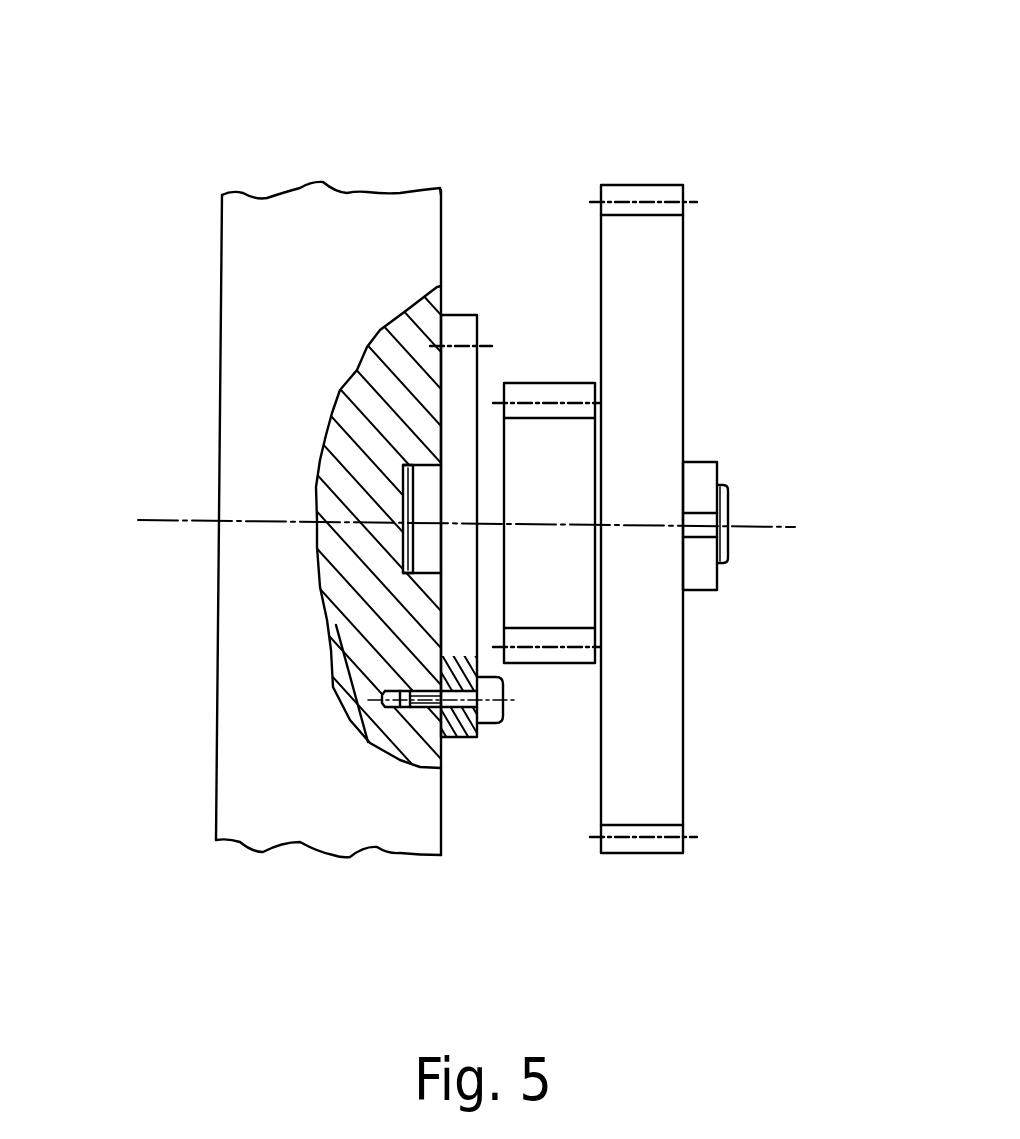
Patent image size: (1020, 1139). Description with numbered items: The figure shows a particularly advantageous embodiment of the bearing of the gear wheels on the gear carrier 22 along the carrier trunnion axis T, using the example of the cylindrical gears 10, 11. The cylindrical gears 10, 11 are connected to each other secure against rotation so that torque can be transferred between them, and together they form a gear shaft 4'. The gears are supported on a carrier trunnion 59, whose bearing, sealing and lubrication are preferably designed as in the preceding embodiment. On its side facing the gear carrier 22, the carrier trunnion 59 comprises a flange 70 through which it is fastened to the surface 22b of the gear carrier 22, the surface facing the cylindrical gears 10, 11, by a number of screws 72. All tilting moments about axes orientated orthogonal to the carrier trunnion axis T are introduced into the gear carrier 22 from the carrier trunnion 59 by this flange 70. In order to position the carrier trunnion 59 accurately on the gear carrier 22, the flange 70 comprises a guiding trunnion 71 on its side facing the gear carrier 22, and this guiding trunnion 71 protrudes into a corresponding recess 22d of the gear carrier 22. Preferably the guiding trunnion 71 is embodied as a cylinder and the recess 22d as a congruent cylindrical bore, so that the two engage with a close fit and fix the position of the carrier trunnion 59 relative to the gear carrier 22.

The gear carrier 22 is at (332, 213).
The surface of the gear carrier 22b is at (443, 832).
The recess 22d is at (402, 548).
The flange 70 is at (459, 325).
The guiding trunnion 71 is at (428, 483).
The screws 72 is at (488, 712).
The cylindrical gear 10 is at (567, 448).
The cylindrical gear 11 is at (650, 256).
The gear shaft 4' is at (705, 473).
The carrier trunnion axis T is at (767, 528).
The carrier trunnion 59 is at (507, 568).